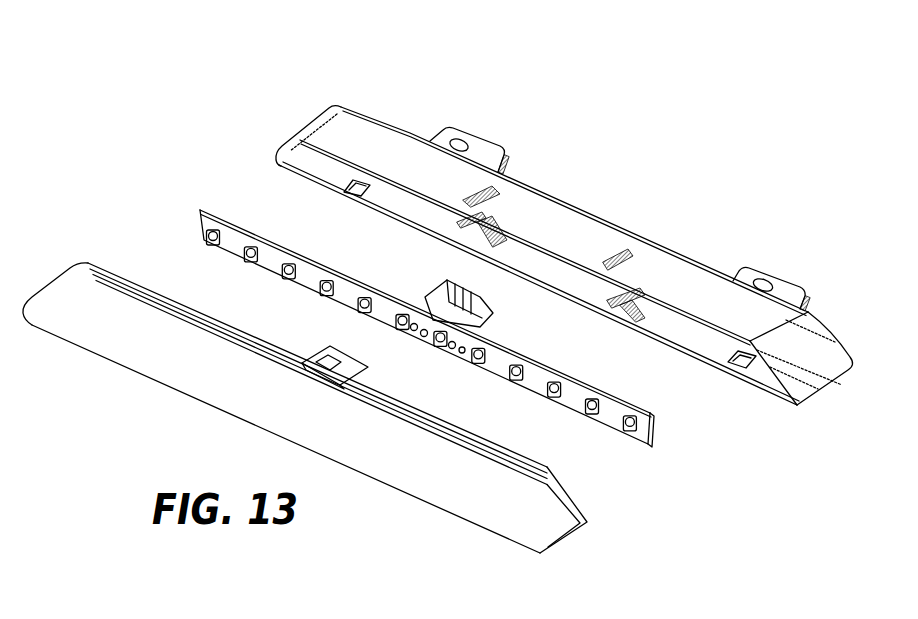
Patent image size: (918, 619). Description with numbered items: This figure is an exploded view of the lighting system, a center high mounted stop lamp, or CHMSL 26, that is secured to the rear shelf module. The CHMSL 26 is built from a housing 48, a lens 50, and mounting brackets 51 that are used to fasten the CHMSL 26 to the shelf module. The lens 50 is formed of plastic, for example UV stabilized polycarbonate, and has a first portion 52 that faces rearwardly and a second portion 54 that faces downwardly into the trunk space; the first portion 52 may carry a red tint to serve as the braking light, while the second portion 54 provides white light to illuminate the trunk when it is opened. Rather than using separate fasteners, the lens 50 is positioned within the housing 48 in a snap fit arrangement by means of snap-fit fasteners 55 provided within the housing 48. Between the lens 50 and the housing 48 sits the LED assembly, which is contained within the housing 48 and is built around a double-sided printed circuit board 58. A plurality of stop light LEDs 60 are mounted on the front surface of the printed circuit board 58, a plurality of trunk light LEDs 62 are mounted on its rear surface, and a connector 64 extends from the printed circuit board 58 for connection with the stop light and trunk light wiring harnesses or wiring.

The CHMSL 26 is at (209, 103).
The housing 48 is at (564, 255).
The lens 50 is at (120, 277).
The mounting brackets 51 is at (507, 156).
The first portion 52 is at (402, 459).
The second portion 54 is at (556, 546).
The snap-fit fasteners 55 is at (352, 190).
The printed circuit board 58 is at (651, 447).
The stop light LEDs 60 is at (593, 408).
The trunk light LEDs 62 is at (393, 288).
The connector 64 is at (493, 311).